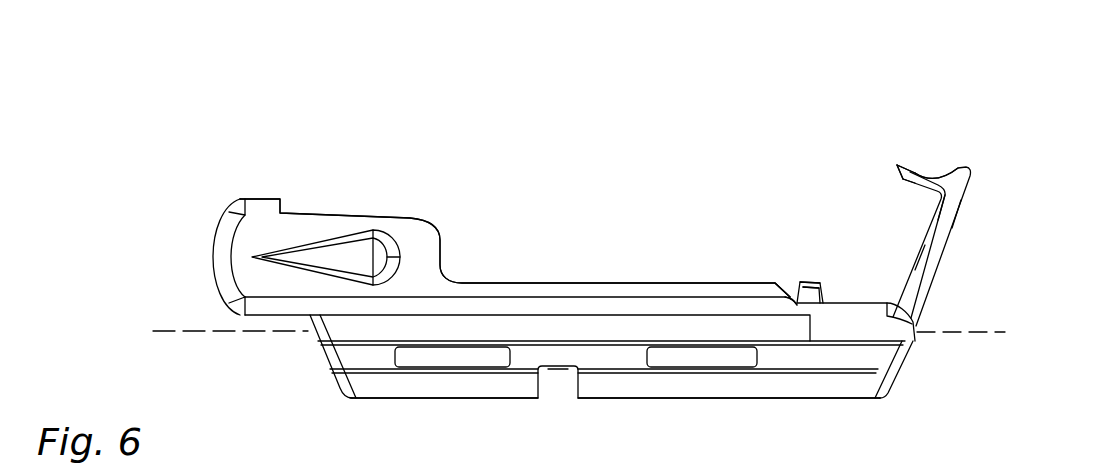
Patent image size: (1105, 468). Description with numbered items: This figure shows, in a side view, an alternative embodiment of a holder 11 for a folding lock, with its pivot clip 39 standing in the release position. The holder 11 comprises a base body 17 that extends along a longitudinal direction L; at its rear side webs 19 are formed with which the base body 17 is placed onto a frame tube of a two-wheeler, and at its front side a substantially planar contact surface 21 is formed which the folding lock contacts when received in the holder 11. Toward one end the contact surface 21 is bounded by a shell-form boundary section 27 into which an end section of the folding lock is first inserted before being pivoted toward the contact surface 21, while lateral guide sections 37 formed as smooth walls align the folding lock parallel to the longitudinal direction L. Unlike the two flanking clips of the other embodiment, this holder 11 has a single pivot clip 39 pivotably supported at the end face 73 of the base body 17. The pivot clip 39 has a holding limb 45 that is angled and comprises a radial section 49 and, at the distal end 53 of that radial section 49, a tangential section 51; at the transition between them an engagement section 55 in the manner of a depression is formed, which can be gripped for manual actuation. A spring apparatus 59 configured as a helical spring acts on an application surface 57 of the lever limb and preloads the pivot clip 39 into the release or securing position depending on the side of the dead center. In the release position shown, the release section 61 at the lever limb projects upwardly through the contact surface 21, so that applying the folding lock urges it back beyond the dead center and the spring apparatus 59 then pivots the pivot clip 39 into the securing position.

The holder 11 is at (514, 128).
The boundary section 27 is at (223, 258).
The lateral guide section 37 is at (290, 228).
The base body 17 is at (367, 327).
The web 19 is at (418, 383).
The spring apparatus 59 is at (783, 295).
The application surface 57 is at (794, 298).
The release section 61 is at (812, 283).
The contact surface 21 is at (850, 301).
The distal end 53 is at (978, 170).
The tangential section 51 is at (915, 178).
The engagement section 55 is at (942, 175).
The holding limb 45 is at (950, 203).
The pivot clip 39 is at (940, 221).
The radial section 49 is at (923, 263).
The longitudinal direction L is at (222, 316).
The end face 73 is at (954, 327).